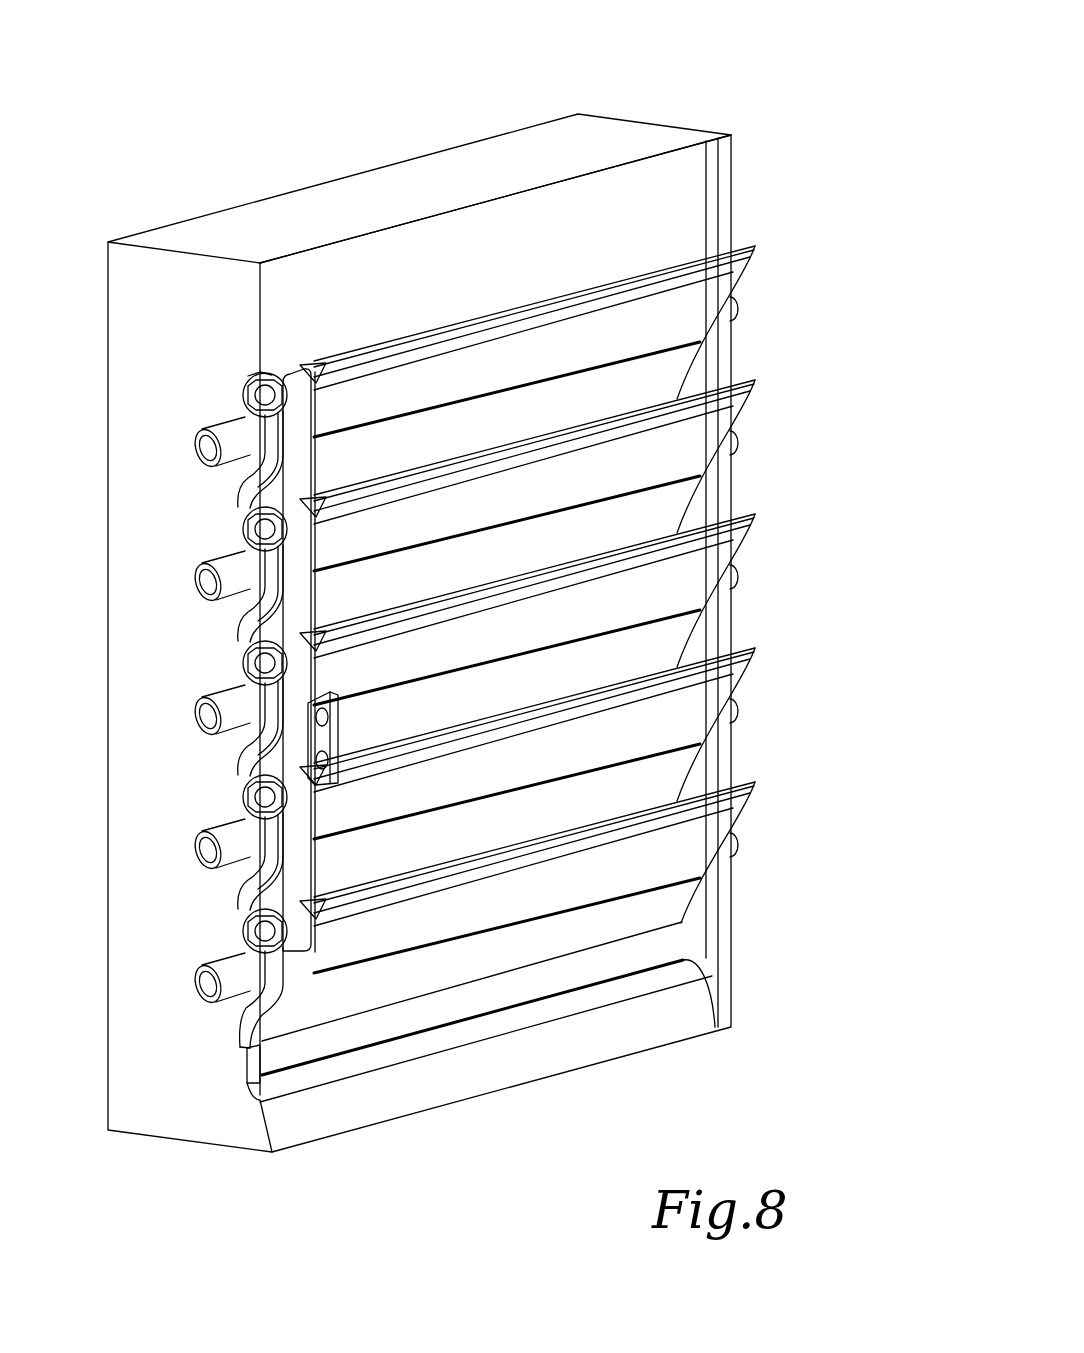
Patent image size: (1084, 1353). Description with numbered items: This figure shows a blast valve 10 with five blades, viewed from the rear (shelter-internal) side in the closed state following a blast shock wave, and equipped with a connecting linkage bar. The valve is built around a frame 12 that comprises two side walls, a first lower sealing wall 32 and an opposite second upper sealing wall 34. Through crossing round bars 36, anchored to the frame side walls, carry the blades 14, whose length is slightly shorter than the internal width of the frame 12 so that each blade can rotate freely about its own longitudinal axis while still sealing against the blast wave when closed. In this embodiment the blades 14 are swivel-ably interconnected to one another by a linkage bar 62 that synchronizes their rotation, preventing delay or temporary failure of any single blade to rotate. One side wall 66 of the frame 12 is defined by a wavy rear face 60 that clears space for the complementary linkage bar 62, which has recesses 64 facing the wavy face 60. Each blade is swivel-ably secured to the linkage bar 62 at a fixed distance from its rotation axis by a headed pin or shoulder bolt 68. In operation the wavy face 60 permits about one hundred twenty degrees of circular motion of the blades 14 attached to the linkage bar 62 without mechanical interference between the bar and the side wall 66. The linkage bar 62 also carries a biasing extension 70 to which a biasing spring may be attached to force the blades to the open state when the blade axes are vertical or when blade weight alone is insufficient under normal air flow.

The blast valve 10 is at (710, 44).
The frame 12 is at (160, 235).
The blades 14 is at (752, 273).
The first lower sealing wall 32 is at (492, 1094).
The second upper sealing wall 34 is at (407, 155).
The round bars 36 is at (208, 430).
The wavy rear face 60 is at (303, 942).
The linkage bar 62 is at (270, 977).
The recesses 64 is at (285, 877).
The side wall 66 is at (108, 745).
The headed pin or shoulder bolt 68 is at (262, 928).
The linkage bar biasing extension 70 is at (312, 742).